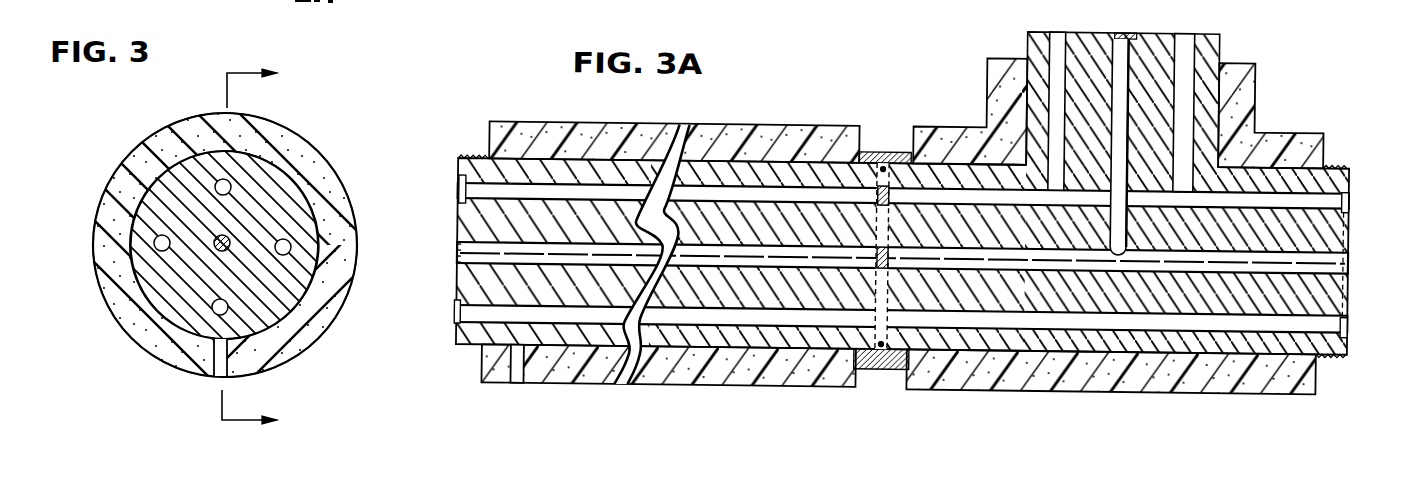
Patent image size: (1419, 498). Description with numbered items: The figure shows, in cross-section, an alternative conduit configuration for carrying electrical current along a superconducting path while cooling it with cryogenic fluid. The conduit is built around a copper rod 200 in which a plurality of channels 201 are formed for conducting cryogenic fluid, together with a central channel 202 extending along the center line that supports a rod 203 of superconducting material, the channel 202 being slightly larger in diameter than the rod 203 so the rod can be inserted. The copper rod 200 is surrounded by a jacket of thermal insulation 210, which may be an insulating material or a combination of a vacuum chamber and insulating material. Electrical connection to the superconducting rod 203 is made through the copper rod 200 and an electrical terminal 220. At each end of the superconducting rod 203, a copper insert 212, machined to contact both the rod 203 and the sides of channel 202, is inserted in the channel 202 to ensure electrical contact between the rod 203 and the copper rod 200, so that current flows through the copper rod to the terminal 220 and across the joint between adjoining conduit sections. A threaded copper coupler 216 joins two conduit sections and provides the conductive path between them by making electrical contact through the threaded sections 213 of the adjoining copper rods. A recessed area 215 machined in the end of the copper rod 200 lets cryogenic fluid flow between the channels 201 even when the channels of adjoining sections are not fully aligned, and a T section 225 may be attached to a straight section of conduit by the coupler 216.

In FIG. 3, the copper rod 200 is at (222, 249).
In FIG. 3, the channels 201 is at (183, 224).
In FIG. 3A, the channels 201 is at (492, 315).
In FIG. 3A, the channel 202 is at (497, 237).
In FIG. 3, the rod 203 is at (214, 250).
In FIG. 3A, the rod 203 is at (490, 253).
In FIG. 3, the jacket of thermal insulation 210 is at (275, 138).
In FIG. 3A, the jacket of thermal insulation 210 is at (610, 119).
In FIG. 3A, the copper insert 212 is at (457, 250).
In FIG. 3A, the threaded sections 213 is at (857, 156).
In FIG. 3A, the recessed area 215 is at (457, 181).
In FIG. 3A, the threaded copper coupler 216 is at (895, 152).
In FIG. 3, the electrical terminal 220 is at (218, 378).
In FIG. 3A, the electrical terminal 220 is at (518, 347).
In FIG. 3A, the T section 225 is at (1195, 386).